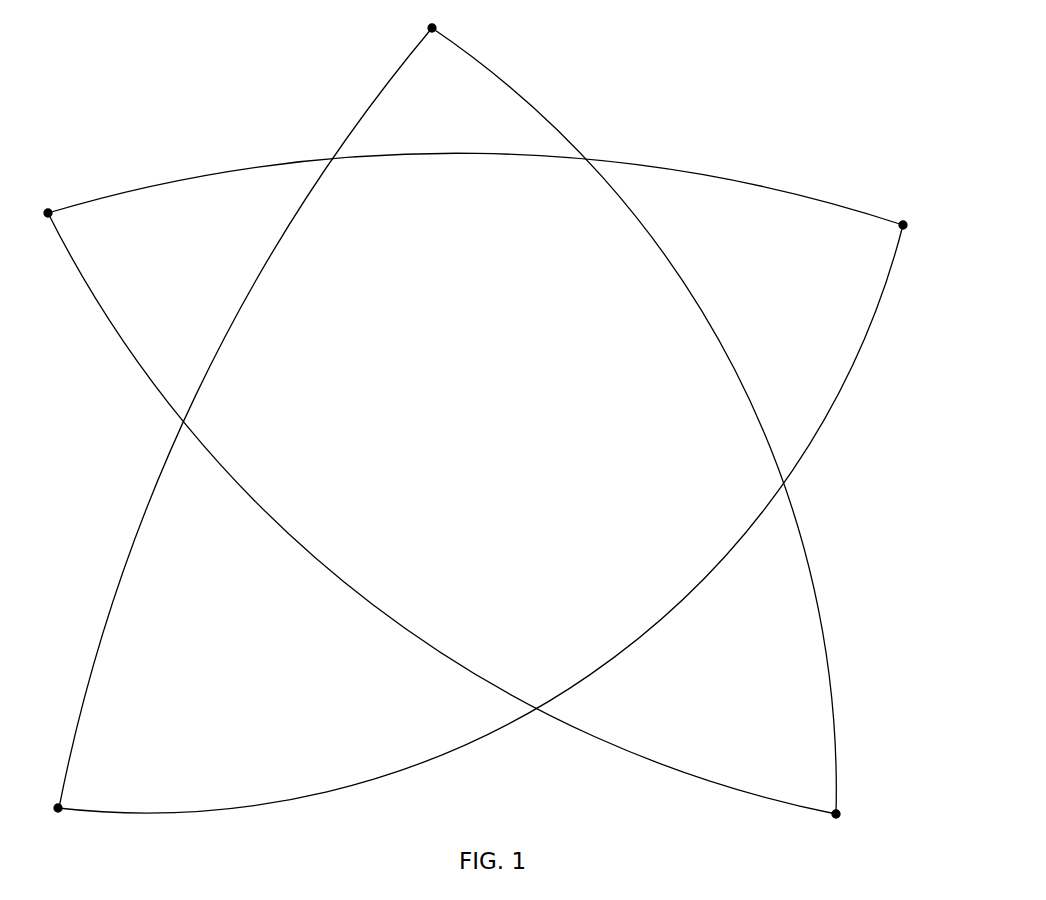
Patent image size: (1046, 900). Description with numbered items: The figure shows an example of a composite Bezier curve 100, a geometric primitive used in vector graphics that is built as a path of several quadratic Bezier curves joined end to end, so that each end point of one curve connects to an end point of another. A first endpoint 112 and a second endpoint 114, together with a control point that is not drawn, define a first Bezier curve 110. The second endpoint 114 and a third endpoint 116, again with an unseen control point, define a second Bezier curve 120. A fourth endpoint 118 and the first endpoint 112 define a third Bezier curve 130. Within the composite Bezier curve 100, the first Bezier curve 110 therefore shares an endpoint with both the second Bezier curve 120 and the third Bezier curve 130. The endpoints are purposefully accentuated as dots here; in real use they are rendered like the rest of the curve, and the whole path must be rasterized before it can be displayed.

The composite Bezier curve 100 is at (909, 488).
The first Bezier curve 110 is at (695, 588).
The first endpoint 112 is at (60, 806).
The second endpoint 114 is at (902, 223).
The third endpoint 116 is at (51, 211).
The fourth endpoint 118 is at (432, 32).
The second Bezier curve 120 is at (677, 172).
The third Bezier curve 130 is at (263, 272).